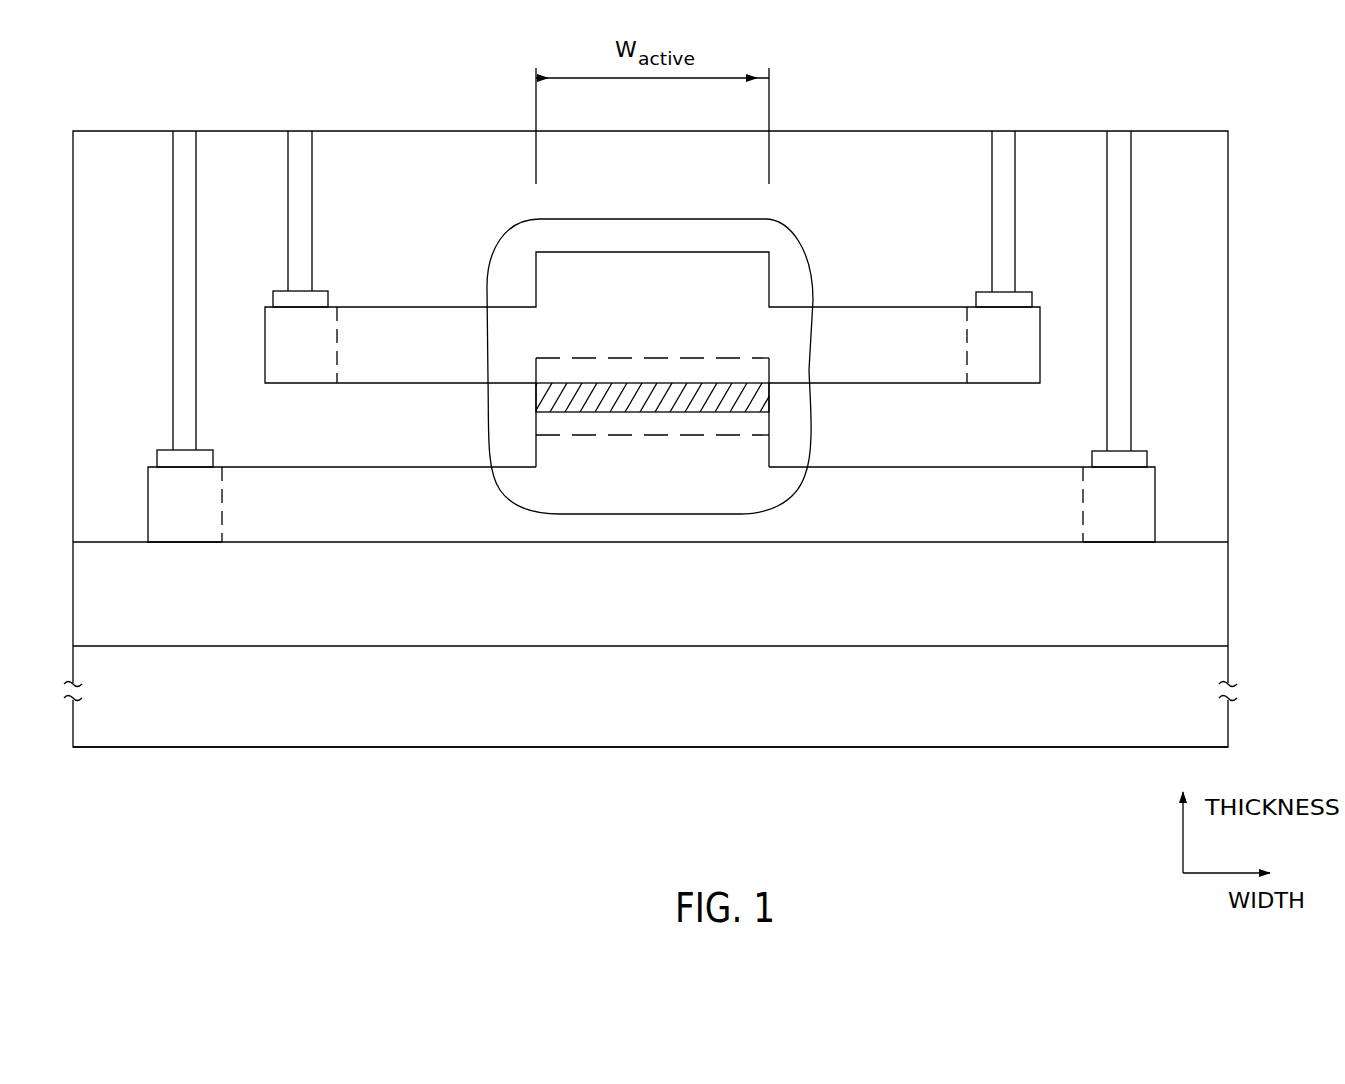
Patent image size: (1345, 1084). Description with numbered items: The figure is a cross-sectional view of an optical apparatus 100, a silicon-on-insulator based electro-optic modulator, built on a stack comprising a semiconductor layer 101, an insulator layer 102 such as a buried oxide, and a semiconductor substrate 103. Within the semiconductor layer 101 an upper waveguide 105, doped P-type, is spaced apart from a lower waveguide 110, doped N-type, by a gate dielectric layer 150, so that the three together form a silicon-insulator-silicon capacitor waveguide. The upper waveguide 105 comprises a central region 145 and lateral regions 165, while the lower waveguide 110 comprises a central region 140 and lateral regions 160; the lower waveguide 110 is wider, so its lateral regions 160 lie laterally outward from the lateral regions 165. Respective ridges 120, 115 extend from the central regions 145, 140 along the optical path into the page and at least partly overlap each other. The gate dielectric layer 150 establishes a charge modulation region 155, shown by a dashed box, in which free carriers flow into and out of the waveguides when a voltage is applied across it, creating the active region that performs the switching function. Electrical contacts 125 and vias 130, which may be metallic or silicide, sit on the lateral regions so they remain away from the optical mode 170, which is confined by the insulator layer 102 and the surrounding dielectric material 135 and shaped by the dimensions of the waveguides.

The optical apparatus 100 is at (1149, 48).
The semiconductor layer 101 is at (132, 536).
The insulator layer 102 is at (1030, 602).
The semiconductor substrate 103 is at (1114, 705).
The upper waveguide 105 is at (856, 301).
The lower waveguide 110 is at (918, 458).
The ridge 115 is at (691, 428).
The ridge 120 is at (688, 282).
The electrical contacts 125 is at (328, 300).
The vias 130 is at (198, 192).
The dielectric material 135 is at (218, 148).
The central region 140 is at (385, 542).
The central region 145 is at (400, 383).
The gate dielectric layer 150 is at (769, 391).
The charge modulation region 155 is at (608, 440).
The lateral regions 160 is at (188, 542).
The lateral regions 165 is at (290, 383).
The optical mode 170 is at (811, 249).